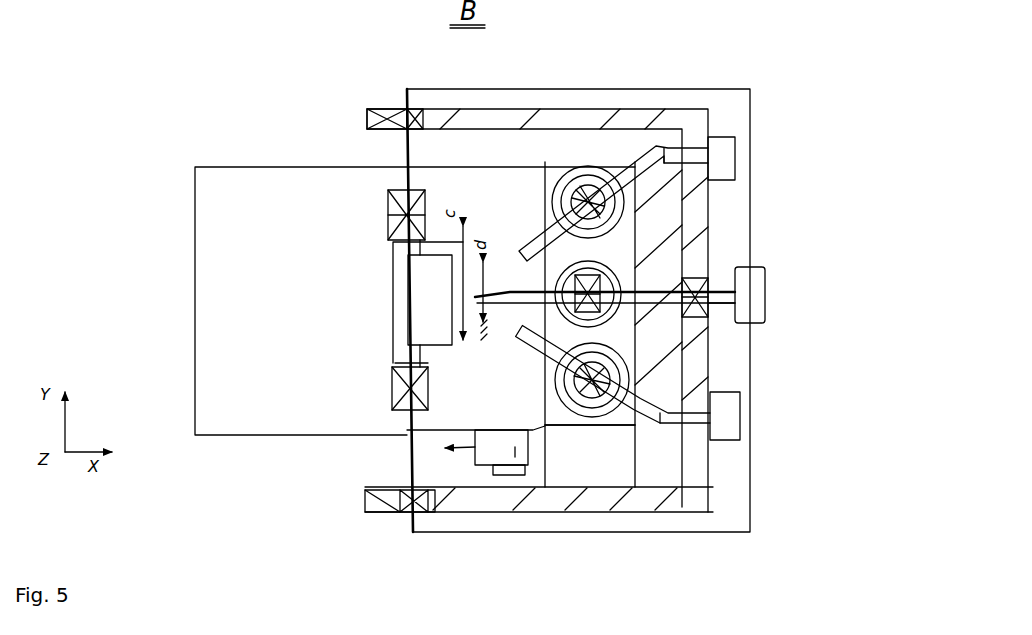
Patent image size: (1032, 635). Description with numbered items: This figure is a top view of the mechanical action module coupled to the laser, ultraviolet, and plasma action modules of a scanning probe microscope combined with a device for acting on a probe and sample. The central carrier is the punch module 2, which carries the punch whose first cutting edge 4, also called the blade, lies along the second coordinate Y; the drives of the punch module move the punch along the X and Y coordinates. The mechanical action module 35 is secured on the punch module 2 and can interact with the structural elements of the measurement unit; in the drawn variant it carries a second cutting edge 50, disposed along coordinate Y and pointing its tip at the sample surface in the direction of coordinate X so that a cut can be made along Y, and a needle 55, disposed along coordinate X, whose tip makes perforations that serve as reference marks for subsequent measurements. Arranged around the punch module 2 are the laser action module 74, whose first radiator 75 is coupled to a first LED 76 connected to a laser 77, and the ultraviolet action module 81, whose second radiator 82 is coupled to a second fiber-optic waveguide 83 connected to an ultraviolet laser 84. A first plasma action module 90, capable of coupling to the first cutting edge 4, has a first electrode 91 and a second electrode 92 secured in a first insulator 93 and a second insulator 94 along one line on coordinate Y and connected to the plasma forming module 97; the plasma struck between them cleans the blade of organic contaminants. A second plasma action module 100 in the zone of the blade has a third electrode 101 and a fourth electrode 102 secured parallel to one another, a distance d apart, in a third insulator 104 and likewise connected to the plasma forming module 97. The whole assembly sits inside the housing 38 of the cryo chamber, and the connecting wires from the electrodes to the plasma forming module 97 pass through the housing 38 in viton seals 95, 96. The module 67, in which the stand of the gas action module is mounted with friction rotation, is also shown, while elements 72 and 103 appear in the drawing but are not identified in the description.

The punch module 2 is at (333, 435).
The first cutting edge 4 is at (393, 287).
The mechanical action module 35 is at (520, 470).
The housing 38 is at (573, 120).
The second cutting edge 50 is at (477, 465).
The needle 55 is at (462, 452).
The module 67 is at (520, 255).
The housing bottom wall 72 is at (578, 425).
The laser action module 74 is at (645, 163).
The first radiator 75 is at (540, 250).
The first LED 76 is at (680, 152).
The laser 77 is at (718, 165).
The ultraviolet action module 81 is at (612, 425).
The second radiator 82 is at (641, 394).
The second fiber-optic waveguide 83 is at (690, 405).
The ultraviolet laser 84 is at (722, 418).
The first plasma action module 90 is at (393, 315).
The first electrode 91 is at (393, 240).
The second electrode 92 is at (393, 357).
The first insulator 93 is at (388, 192).
The second insulator 94 is at (393, 397).
The viton seal 95 is at (370, 111).
The viton seal 96 is at (387, 492).
The plasma forming module 97 is at (748, 312).
The second plasma action module 100 is at (645, 290).
The third electrode 101 is at (418, 125).
The fourth electrode 102 is at (700, 278).
The shaft end 103 is at (735, 268).
The third insulator 104 is at (675, 233).